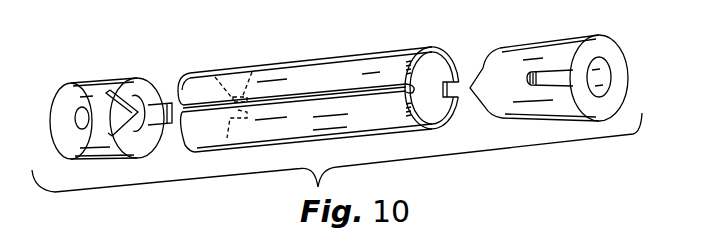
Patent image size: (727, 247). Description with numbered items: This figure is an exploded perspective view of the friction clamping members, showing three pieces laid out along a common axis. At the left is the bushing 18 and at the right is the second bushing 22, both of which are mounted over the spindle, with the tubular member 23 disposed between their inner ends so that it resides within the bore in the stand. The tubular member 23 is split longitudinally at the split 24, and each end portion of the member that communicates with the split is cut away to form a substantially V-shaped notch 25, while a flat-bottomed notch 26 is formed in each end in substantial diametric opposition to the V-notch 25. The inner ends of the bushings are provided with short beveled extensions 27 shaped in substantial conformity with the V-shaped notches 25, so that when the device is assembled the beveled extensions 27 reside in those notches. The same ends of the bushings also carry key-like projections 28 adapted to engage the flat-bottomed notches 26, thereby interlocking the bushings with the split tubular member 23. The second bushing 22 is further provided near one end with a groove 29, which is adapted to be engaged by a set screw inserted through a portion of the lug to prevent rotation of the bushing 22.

The bushing 18 is at (95, 83).
The second bushing 22 is at (600, 42).
The tubular member 23 is at (390, 53).
The split 24 is at (303, 95).
The V-shaped notches 25 is at (183, 108).
The flat-bottomed notches 26 is at (252, 72).
The beveled extensions 27 is at (125, 108).
The key-like projections 28 is at (168, 106).
The groove 29 is at (543, 73).